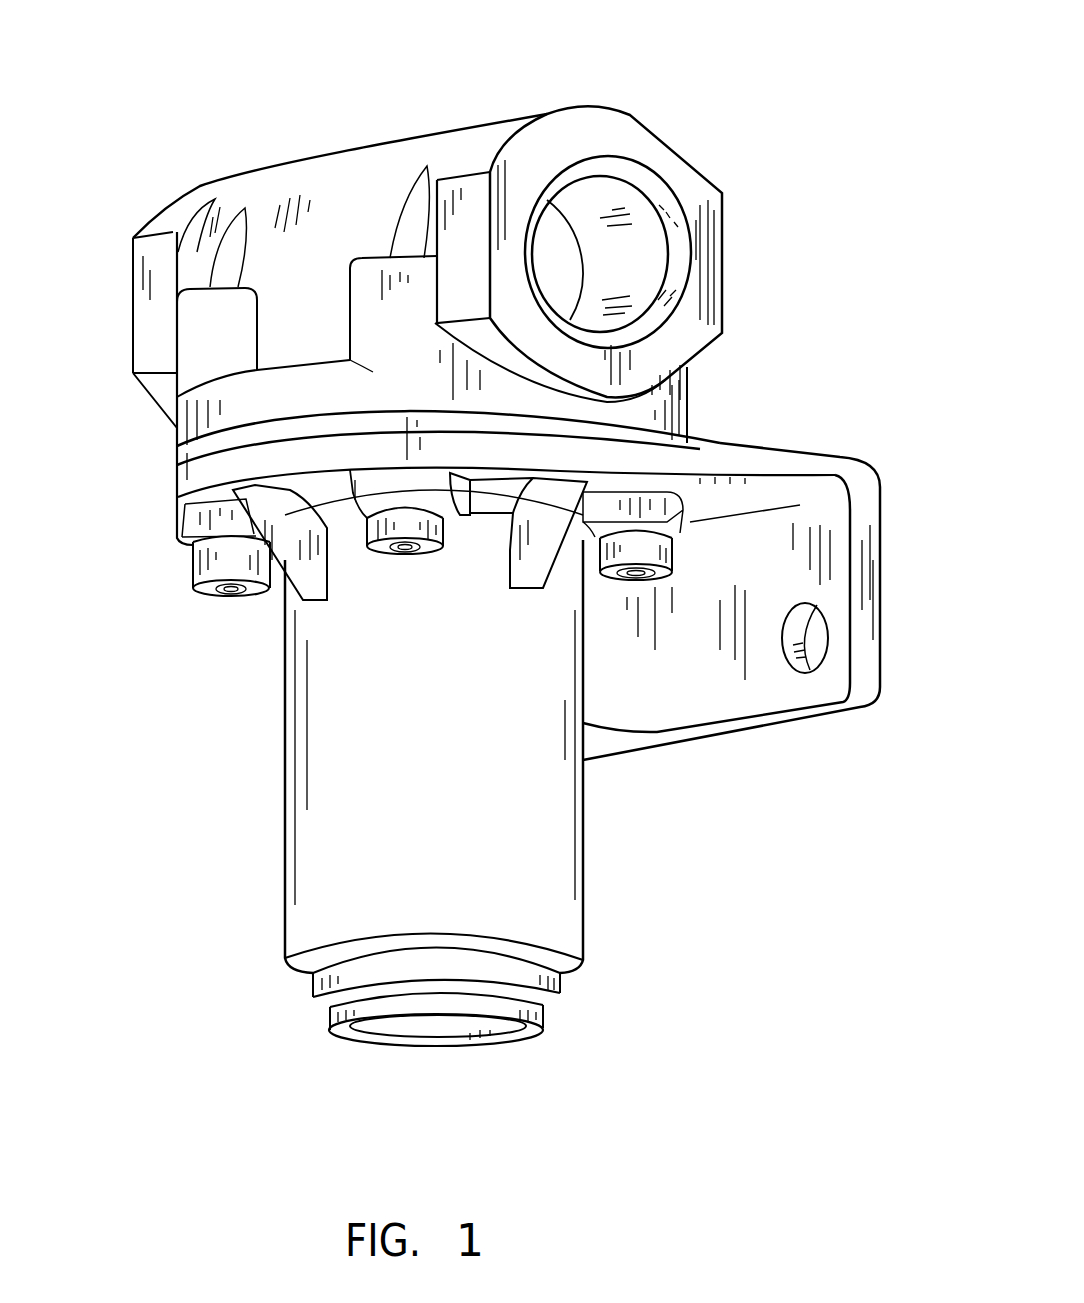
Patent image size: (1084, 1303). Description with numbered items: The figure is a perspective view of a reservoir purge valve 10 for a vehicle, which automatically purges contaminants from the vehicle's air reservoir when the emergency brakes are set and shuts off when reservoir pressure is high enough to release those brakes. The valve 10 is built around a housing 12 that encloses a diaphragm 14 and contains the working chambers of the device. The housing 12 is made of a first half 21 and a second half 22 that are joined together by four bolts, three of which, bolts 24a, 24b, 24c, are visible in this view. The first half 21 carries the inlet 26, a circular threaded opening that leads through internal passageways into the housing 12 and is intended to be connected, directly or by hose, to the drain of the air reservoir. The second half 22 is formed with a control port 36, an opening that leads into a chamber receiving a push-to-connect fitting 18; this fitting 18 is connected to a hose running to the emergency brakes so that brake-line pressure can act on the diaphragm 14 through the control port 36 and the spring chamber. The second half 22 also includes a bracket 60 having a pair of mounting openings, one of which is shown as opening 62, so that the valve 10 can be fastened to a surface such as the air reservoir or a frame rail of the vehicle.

The reservoir purge valve 10 is at (143, 127).
The housing 12 is at (717, 398).
The diaphragm 14 is at (197, 457).
The push-to-connect fitting 18 is at (468, 1030).
The first half 21 is at (713, 207).
The second half 22 is at (840, 467).
The bolt 24a is at (212, 565).
The bolt 24b is at (383, 550).
The bolt 24c is at (668, 576).
The inlet 26 is at (618, 240).
The control port 36 is at (313, 983).
The bracket 60 is at (712, 713).
The opening 62 is at (802, 675).